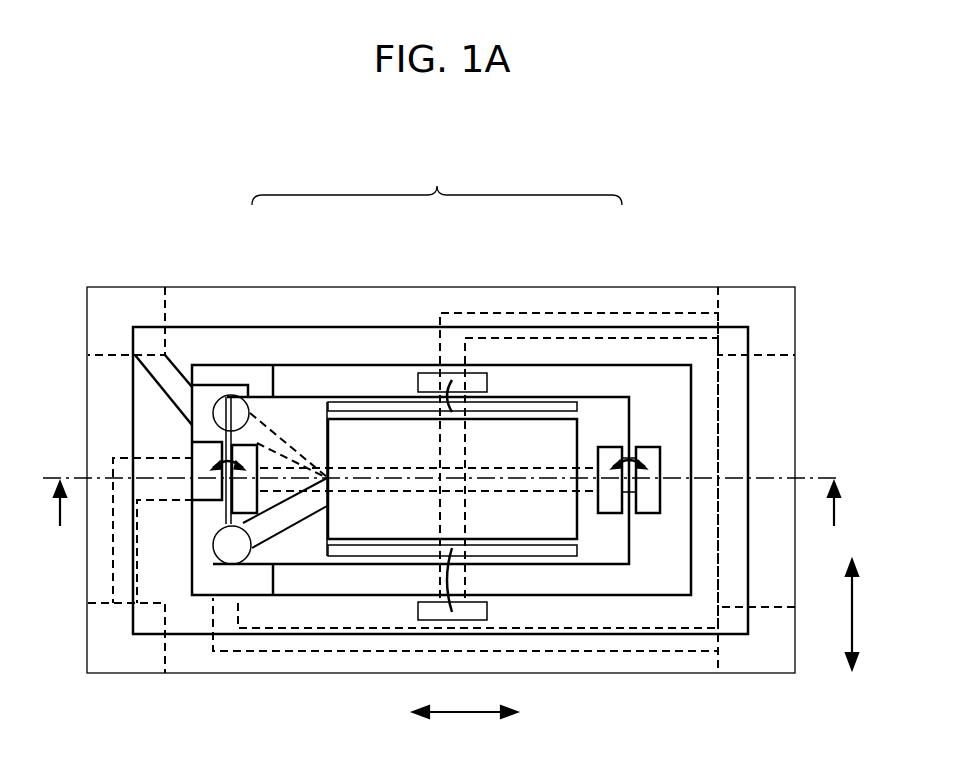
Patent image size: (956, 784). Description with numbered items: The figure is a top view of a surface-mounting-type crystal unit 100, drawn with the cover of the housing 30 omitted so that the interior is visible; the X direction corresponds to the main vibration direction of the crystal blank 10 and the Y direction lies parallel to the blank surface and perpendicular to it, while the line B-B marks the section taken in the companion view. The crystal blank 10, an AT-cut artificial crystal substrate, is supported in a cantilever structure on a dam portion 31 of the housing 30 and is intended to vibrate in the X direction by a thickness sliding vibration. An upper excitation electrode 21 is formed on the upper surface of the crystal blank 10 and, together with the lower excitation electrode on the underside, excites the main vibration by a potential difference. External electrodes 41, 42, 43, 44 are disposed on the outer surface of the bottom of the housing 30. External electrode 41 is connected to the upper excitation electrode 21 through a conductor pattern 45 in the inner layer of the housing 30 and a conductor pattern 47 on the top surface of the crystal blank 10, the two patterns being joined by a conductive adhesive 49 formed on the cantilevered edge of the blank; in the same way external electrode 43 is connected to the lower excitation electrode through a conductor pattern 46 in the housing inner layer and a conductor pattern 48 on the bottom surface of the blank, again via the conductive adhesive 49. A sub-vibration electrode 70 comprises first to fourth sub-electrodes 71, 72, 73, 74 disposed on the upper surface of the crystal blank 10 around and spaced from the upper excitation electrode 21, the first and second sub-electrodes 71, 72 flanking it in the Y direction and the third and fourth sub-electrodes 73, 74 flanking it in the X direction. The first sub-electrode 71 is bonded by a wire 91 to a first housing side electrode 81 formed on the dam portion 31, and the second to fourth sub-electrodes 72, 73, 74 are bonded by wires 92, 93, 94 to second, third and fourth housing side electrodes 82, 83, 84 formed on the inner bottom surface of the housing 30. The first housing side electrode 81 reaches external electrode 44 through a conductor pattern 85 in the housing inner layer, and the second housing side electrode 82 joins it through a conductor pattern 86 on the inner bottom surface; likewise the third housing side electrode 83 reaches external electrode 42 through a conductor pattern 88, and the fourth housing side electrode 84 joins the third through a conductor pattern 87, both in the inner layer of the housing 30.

The crystal unit 100 is at (110, 146).
The crystal blank 10 is at (608, 545).
The upper excitation electrode 21 is at (348, 445).
The housing 30 is at (800, 440).
The dam portion 31 is at (215, 460).
The external electrode 41 is at (762, 660).
The external electrode 42 is at (128, 660).
The external electrode 43 is at (125, 305).
The external electrode 44 is at (765, 305).
The conductor pattern 45 is at (331, 645).
The conductor pattern 46 is at (170, 383).
The conductor pattern 47 is at (282, 513).
The conductor pattern 48 is at (296, 445).
The conductive adhesive 49 is at (223, 395).
The sub-vibration electrode 70 is at (437, 182).
The first sub-electrode 71 is at (403, 405).
The second sub-electrode 72 is at (550, 545).
The third sub-electrode 73 is at (250, 445).
The fourth sub-electrode 74 is at (612, 447).
The first housing side electrode 81 is at (487, 382).
The second housing side electrode 82 is at (487, 610).
The third housing side electrode 83 is at (205, 492).
The fourth housing side electrode 84 is at (653, 447).
The conductor pattern 85 is at (681, 305).
The conductor pattern 86 is at (465, 449).
The conductor pattern 87 is at (388, 445).
The conductor pattern 88 is at (113, 583).
The wire 91 is at (440, 383).
The wire 92 is at (447, 583).
The wire 93 is at (213, 458).
The wire 94 is at (643, 447).